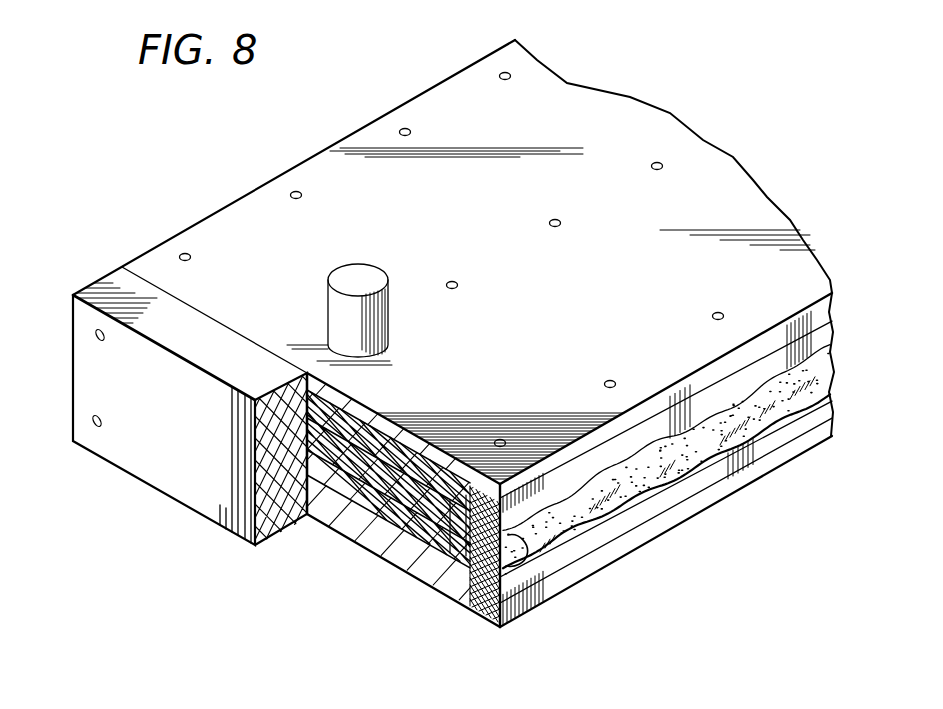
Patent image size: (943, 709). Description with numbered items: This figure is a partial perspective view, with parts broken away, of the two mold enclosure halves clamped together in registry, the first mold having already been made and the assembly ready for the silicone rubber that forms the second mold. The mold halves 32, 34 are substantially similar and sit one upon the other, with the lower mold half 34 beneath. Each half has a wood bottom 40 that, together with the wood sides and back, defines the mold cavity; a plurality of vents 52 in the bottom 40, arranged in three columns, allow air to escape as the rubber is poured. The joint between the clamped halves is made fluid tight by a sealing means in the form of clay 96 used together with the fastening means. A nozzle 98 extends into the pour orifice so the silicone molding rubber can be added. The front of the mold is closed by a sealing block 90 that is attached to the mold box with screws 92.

The mold half 32 is at (793, 450).
The lower mold half 34 is at (818, 316).
The wood bottom 40 is at (474, 607).
The vents 52 is at (187, 252).
The sealing block 90 is at (157, 470).
The screws 92 is at (97, 420).
The clay 96 is at (690, 468).
The nozzle 98 is at (389, 333).